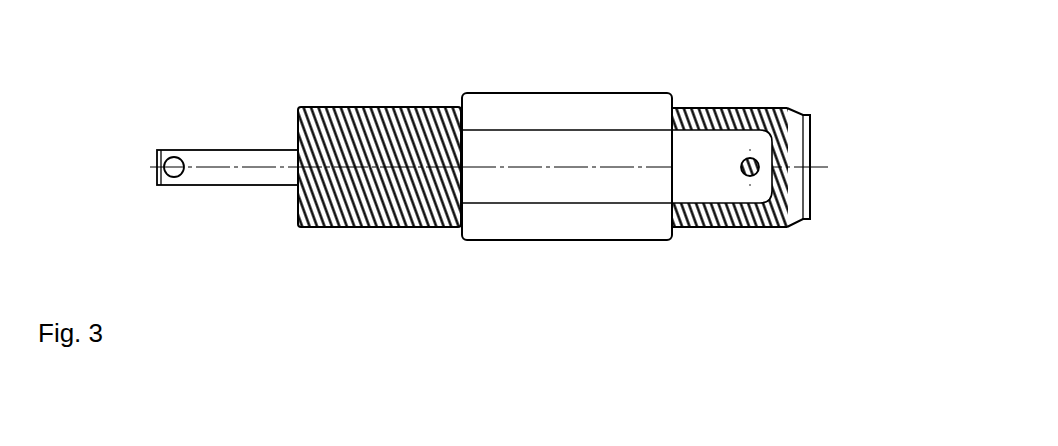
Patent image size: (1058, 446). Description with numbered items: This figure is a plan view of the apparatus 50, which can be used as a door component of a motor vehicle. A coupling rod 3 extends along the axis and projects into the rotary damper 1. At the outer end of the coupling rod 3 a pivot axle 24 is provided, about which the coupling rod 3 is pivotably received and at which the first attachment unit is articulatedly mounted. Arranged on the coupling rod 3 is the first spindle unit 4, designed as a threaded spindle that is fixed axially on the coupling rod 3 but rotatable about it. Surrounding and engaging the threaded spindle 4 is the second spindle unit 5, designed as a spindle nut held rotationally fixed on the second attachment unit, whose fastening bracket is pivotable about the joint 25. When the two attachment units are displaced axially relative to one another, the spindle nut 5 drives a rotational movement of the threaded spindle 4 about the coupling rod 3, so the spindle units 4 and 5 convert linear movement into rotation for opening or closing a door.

The apparatus 50 is at (234, 69).
The rotary damper 1 is at (310, 77).
The coupling rod 3 is at (222, 176).
The pivot axle 24 is at (174, 156).
The spindle unit 4 is at (360, 108).
The second spindle unit 5 is at (548, 108).
The joint 25 is at (754, 158).